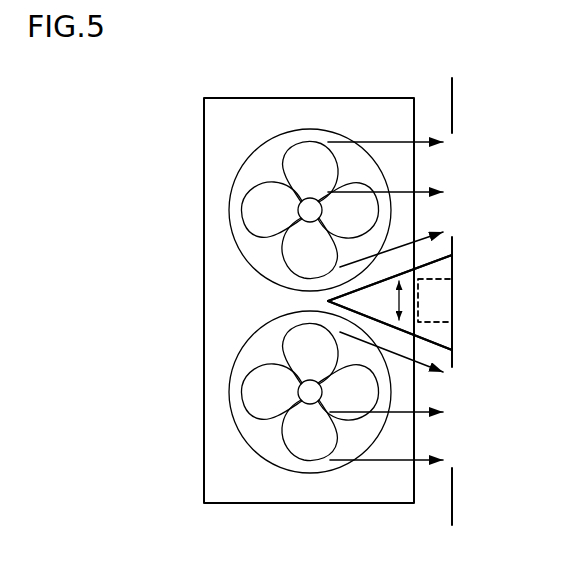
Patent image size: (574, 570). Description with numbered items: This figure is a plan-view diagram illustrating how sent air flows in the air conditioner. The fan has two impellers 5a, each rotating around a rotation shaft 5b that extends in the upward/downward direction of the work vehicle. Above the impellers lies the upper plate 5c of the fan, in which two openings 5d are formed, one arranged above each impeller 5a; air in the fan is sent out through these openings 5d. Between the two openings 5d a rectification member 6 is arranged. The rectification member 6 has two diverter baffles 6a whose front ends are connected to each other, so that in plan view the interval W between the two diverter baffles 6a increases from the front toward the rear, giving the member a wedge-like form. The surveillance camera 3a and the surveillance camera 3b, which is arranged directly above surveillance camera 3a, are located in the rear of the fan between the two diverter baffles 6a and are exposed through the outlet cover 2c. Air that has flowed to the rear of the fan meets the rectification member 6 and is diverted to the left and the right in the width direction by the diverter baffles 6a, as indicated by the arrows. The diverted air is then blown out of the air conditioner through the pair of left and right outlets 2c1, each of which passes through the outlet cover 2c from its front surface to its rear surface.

The upper plate 5c is at (242, 122).
The opening 5d is at (312, 130).
The impeller 5a is at (258, 220).
The rotation shaft 5b is at (301, 209).
The outlet 2c1 is at (452, 164).
The outlet cover 2c is at (455, 356).
The rectification member 6 is at (398, 322).
The diverter baffle 6a is at (431, 259).
The surveillance camera 3b is at (440, 279).
The surveillance camera 3a is at (435, 300).
The interval W is at (399, 298).